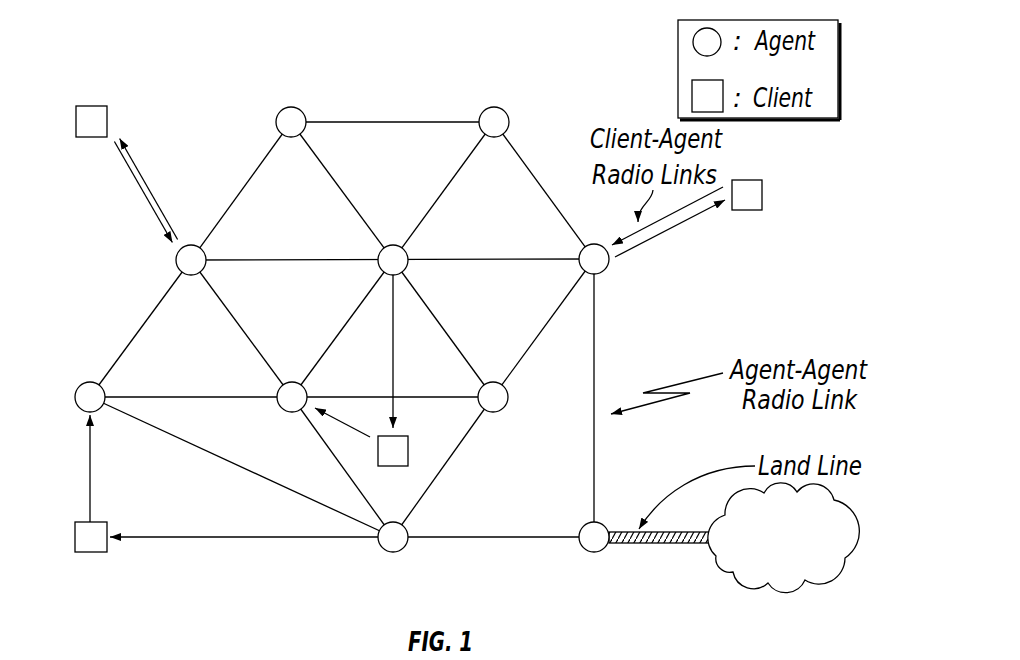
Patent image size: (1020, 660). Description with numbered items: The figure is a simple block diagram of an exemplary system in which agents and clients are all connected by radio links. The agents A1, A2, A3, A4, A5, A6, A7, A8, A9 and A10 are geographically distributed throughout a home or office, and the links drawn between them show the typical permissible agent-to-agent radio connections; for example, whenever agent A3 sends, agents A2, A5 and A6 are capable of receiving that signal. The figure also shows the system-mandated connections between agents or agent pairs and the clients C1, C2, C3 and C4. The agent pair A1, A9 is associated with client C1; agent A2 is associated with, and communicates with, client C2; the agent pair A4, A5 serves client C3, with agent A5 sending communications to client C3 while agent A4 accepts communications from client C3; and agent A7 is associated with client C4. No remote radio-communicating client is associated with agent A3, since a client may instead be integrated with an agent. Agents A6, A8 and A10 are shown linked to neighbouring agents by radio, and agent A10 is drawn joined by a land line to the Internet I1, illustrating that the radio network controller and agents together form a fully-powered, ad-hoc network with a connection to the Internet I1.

The agent A1 is at (86, 384).
The agent A2 is at (205, 252).
The agent A3 is at (292, 107).
The agent A4 is at (305, 388).
The agent A5 is at (406, 252).
The agent A6 is at (495, 107).
The agent A7 is at (606, 271).
The agent A8 is at (504, 410).
The agent A9 is at (396, 552).
The agent A10 is at (597, 552).
The client C1 is at (90, 552).
The client C2 is at (90, 106).
The client C3 is at (398, 436).
The client C4 is at (747, 180).
The Internet I1 is at (782, 584).